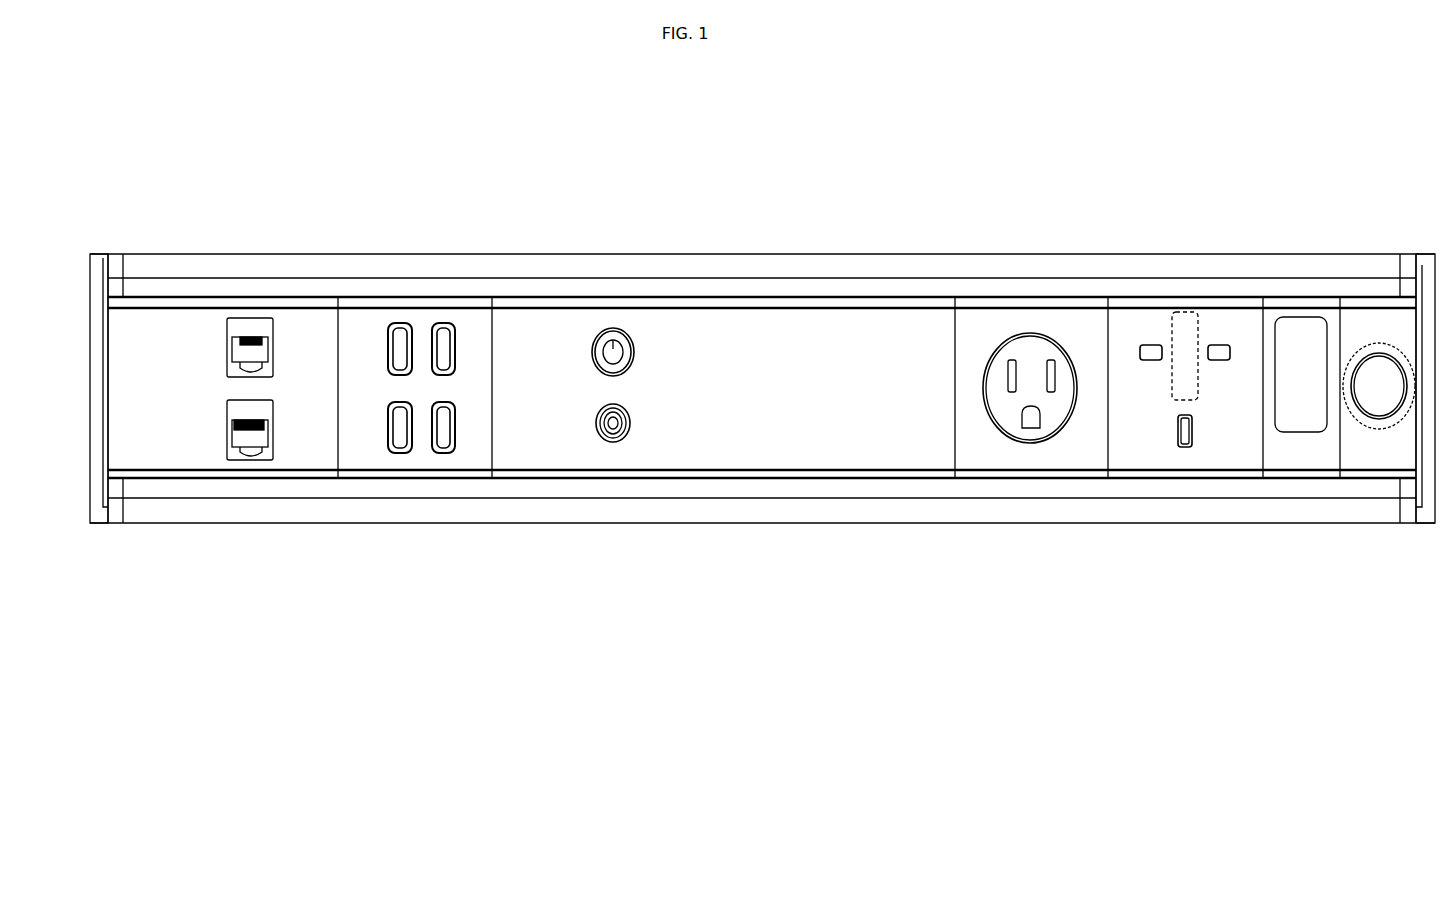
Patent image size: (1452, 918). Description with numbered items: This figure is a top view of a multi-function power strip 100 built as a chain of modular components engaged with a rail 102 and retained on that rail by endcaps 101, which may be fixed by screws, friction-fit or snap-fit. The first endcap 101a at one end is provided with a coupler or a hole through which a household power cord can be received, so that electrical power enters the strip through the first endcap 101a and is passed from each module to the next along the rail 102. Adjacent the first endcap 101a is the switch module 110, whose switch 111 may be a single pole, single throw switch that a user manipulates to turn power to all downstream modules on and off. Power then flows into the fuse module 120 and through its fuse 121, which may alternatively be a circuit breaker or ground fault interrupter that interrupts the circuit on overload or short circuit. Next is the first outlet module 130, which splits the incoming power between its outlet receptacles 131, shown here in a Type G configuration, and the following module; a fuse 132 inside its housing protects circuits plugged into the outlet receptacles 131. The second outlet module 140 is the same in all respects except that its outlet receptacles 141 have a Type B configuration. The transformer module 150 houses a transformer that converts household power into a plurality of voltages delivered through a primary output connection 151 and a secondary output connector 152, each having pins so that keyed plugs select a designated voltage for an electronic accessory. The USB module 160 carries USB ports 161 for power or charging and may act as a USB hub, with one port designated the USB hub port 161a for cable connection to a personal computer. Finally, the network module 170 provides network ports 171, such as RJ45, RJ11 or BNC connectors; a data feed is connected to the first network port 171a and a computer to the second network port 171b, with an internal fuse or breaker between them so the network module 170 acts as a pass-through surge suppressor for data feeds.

The multi-function power strip 100 is at (1130, 118).
The endcaps 101 is at (102, 258).
The first endcap 101a is at (1422, 265).
The rail 102 is at (790, 272).
The switch module 110 is at (1369, 443).
The switch 111 is at (1379, 388).
The fuse module 120 is at (1305, 445).
The fuse 121 is at (1300, 335).
The first outlet module 130 is at (1167, 418).
The outlet receptacles 131 is at (1220, 343).
The fuse 132 is at (1142, 213).
The second outlet module 140 is at (1072, 442).
The outlet receptacles 141 is at (1030, 406).
The transformer module 150 is at (743, 405).
The primary output connection 151 is at (608, 330).
The secondary output connector 152 is at (605, 442).
The USB module 160 is at (472, 337).
The USB ports 161 is at (400, 375).
The USB hub port 161a is at (396, 325).
The network module 170 is at (160, 435).
The network ports 171 is at (265, 462).
The first network port 171a is at (243, 322).
The second network port 171b is at (236, 408).